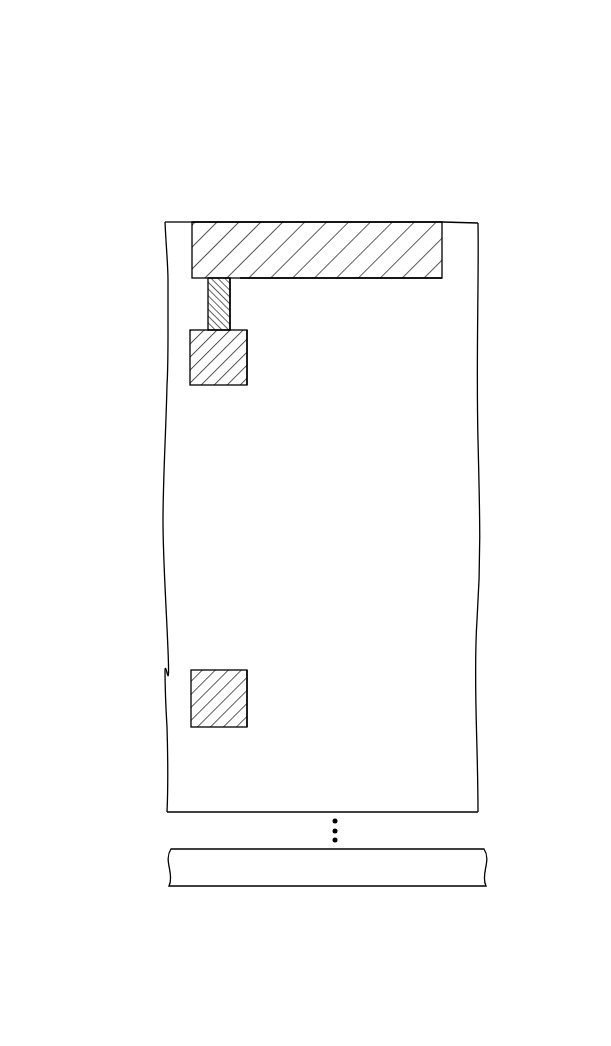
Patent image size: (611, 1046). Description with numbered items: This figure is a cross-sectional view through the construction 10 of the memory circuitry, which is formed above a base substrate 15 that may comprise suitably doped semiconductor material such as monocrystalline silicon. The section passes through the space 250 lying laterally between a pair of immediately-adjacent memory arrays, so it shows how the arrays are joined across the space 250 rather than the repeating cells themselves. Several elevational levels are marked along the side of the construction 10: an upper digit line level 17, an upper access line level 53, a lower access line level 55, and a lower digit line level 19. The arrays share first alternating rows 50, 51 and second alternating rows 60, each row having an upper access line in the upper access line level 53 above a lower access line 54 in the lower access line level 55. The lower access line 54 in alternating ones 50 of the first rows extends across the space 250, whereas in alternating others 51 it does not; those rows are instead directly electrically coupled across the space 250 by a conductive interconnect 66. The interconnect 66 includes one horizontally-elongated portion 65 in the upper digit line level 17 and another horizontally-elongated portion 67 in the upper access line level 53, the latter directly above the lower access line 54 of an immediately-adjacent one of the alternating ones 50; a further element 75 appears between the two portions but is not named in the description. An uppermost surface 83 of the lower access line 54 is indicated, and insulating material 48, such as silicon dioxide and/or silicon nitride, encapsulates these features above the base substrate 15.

The construction 10 is at (465, 130).
The base substrate 15 is at (444, 877).
The upper digit line level 17 is at (156, 255).
The lower digit line level 19 is at (156, 783).
The insulating material 48 is at (313, 552).
The alternating ones of first alternating rows 50 is at (218, 212).
The alternating others of first alternating rows 51 is at (398, 210).
The upper access line level 53 is at (156, 358).
The lower access line 54 is at (249, 703).
The lower access line level 55 is at (156, 700).
The second alternating rows 60 is at (310, 192).
The horizontally-elongated portion 65 is at (396, 240).
The conductive interconnect 66 is at (233, 303).
The another horizontally-elongated portion 67 is at (216, 372).
The via 75 is at (208, 300).
The uppermost surface of the lower access line 83 is at (213, 670).
The space 250 is at (330, 198).